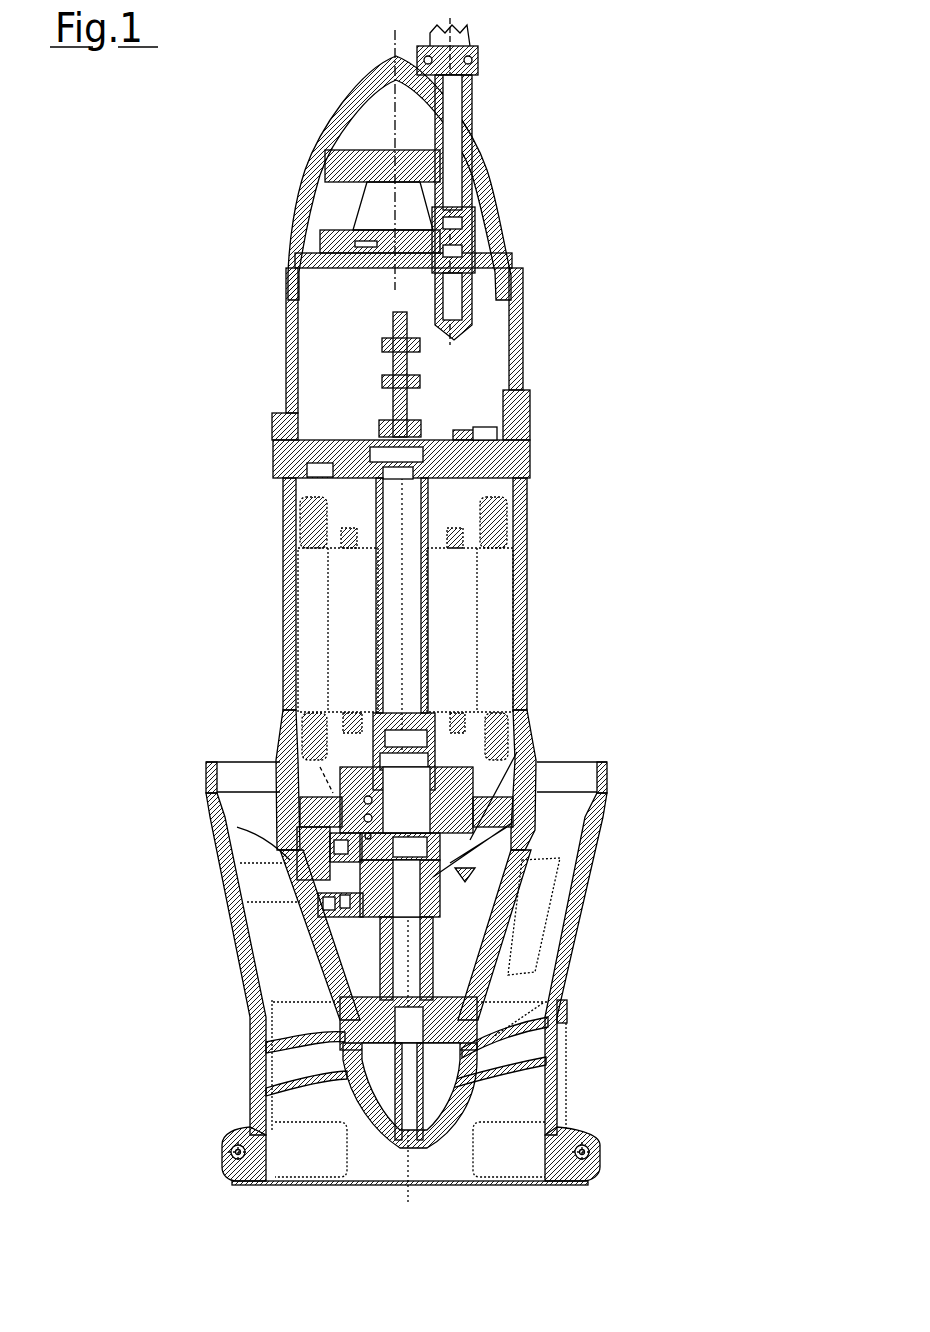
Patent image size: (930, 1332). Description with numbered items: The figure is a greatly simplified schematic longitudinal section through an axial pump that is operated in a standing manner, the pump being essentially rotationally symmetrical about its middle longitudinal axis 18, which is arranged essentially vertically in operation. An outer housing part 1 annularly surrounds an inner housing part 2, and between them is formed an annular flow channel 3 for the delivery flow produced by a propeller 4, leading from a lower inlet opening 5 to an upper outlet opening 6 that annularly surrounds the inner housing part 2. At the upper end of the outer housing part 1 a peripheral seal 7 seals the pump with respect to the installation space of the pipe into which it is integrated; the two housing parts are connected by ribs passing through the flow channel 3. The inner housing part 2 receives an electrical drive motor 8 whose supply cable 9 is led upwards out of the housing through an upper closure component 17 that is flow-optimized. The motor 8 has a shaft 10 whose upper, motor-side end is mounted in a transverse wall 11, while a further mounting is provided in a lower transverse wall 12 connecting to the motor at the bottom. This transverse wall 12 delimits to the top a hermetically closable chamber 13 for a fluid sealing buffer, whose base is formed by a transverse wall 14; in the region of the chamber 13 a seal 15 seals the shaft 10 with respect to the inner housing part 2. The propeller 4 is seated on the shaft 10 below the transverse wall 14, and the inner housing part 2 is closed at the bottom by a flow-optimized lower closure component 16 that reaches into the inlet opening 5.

The outer housing part 1 is at (287, 987).
The inner housing part 2 is at (282, 567).
The annular flow channel 3 is at (280, 983).
The propeller 4 is at (310, 1048).
The lower inlet opening 5 is at (507, 1185).
The upper outlet opening 6 is at (250, 762).
The peripheral seal 7 is at (207, 775).
The electrical drive motor 8 is at (495, 633).
The supply cable 9 is at (457, 100).
The shaft 10 is at (417, 577).
The transverse wall 11 is at (467, 428).
The transverse wall 12 is at (473, 807).
The chamber 13 is at (322, 845).
The transverse wall 14 is at (340, 928).
The seal 15 is at (342, 873).
The lower closure component 16 is at (393, 1138).
The upper closure component 17 is at (335, 137).
The middle longitudinal axis 18 is at (397, 293).